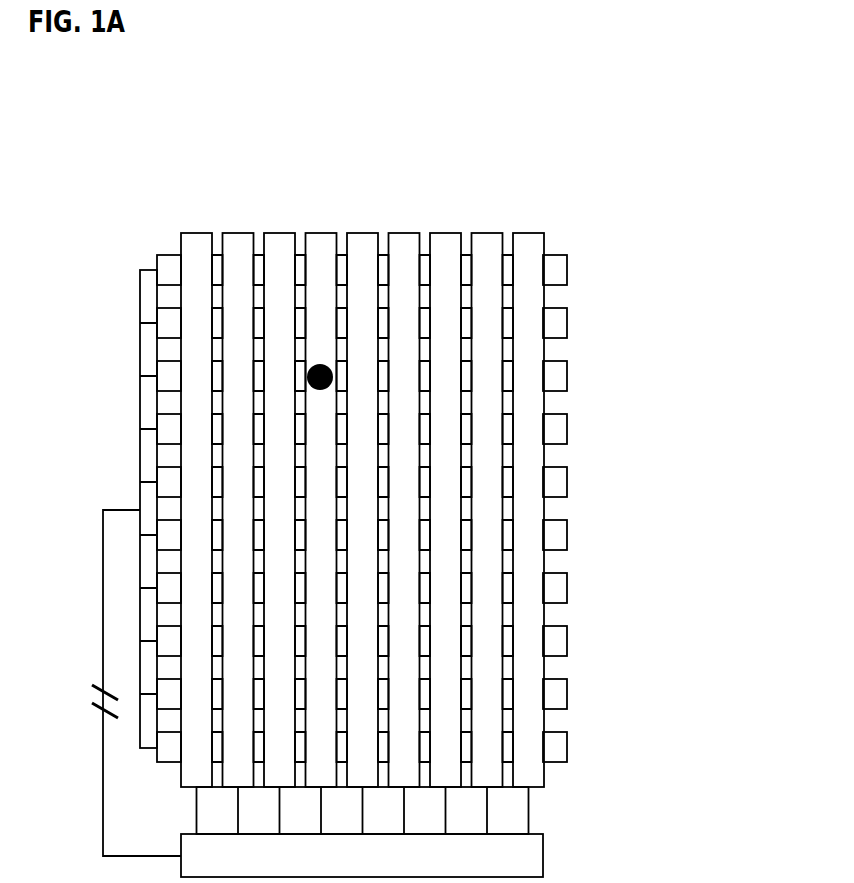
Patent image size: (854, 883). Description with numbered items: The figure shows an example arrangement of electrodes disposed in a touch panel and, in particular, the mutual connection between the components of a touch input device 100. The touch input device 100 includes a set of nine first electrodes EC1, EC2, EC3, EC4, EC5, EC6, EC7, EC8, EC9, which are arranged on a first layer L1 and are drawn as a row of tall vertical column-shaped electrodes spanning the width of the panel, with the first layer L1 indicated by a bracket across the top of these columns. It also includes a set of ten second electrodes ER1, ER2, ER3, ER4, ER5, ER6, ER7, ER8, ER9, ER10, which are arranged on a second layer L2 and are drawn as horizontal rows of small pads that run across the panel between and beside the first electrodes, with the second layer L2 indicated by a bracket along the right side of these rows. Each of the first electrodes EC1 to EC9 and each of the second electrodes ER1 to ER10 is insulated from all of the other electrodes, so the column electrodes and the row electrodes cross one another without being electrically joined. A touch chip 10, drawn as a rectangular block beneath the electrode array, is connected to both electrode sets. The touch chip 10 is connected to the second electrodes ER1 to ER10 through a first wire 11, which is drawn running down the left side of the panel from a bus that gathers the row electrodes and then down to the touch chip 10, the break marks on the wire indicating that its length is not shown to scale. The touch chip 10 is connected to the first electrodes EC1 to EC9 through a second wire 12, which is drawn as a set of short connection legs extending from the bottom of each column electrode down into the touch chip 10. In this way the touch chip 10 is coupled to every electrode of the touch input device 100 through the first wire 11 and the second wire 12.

The touch input device 100 is at (648, 146).
The touch chip 10 is at (543, 857).
The first wire 11 is at (103, 623).
The second wire 12 is at (528, 810).
The first layer L1 is at (578, 156).
The second layer L2 is at (677, 272).
The first electrode EC1 is at (196, 233).
The first electrode EC2 is at (238, 233).
The first electrode EC3 is at (280, 233).
The first electrode EC4 is at (321, 233).
The first electrode EC5 is at (362, 233).
The first electrode EC6 is at (404, 233).
The first electrode EC7 is at (446, 233).
The first electrode EC8 is at (487, 233).
The first electrode EC9 is at (528, 233).
The second electrode ER1 is at (567, 270).
The second electrode ER2 is at (567, 323).
The second electrode ER3 is at (567, 376).
The second electrode ER4 is at (567, 429).
The second electrode ER5 is at (567, 482).
The second electrode ER6 is at (567, 535).
The second electrode ER7 is at (567, 588).
The second electrode ER8 is at (567, 641).
The second electrode ER9 is at (567, 694).
The second electrode ER10 is at (567, 747).